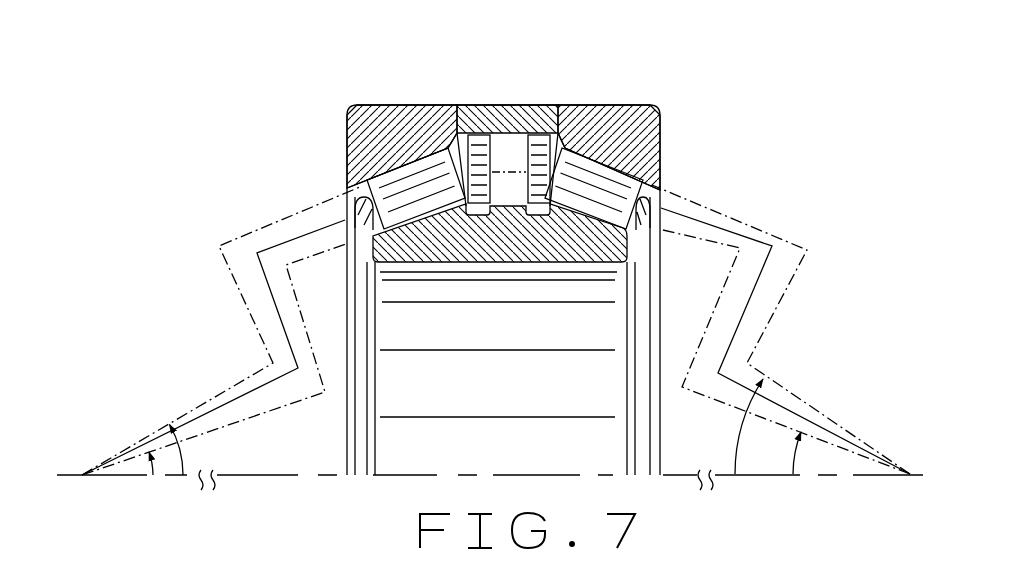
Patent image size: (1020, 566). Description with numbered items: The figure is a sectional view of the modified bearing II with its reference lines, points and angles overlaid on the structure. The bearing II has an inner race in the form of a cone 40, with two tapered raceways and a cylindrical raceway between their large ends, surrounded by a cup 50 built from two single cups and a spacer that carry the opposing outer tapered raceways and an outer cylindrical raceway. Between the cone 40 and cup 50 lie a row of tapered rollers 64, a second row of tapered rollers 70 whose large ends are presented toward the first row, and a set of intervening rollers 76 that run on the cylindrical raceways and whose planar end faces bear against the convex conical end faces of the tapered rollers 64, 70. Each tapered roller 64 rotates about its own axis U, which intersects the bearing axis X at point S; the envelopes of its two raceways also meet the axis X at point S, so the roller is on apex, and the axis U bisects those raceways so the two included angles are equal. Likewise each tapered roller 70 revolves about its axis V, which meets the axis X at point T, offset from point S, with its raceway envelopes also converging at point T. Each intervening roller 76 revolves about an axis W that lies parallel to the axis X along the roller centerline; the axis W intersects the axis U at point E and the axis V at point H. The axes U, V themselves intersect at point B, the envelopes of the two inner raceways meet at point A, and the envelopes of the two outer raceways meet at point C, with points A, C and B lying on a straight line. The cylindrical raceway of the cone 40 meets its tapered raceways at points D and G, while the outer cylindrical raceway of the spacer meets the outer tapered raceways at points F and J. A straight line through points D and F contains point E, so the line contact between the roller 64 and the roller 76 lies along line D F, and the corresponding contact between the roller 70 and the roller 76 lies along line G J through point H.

The cup 50 is at (358, 123).
The cone 40 is at (402, 240).
The tapered rollers 64 is at (325, 200).
The tapered rollers 70 is at (660, 183).
The intervening rollers 76 is at (500, 178).
The modified bearing II is at (238, 120).
The point E is at (412, 158).
The point F is at (467, 137).
The axis W is at (480, 150).
The point C is at (503, 165).
The point B is at (512, 165).
The point J is at (587, 150).
The point H is at (620, 142).
The point D is at (480, 210).
The point A is at (515, 168).
The point G is at (532, 210).
The axis U is at (263, 240).
The axis V is at (745, 237).
The point S is at (79, 498).
The point T is at (913, 493).
The bearing axis X is at (290, 477).